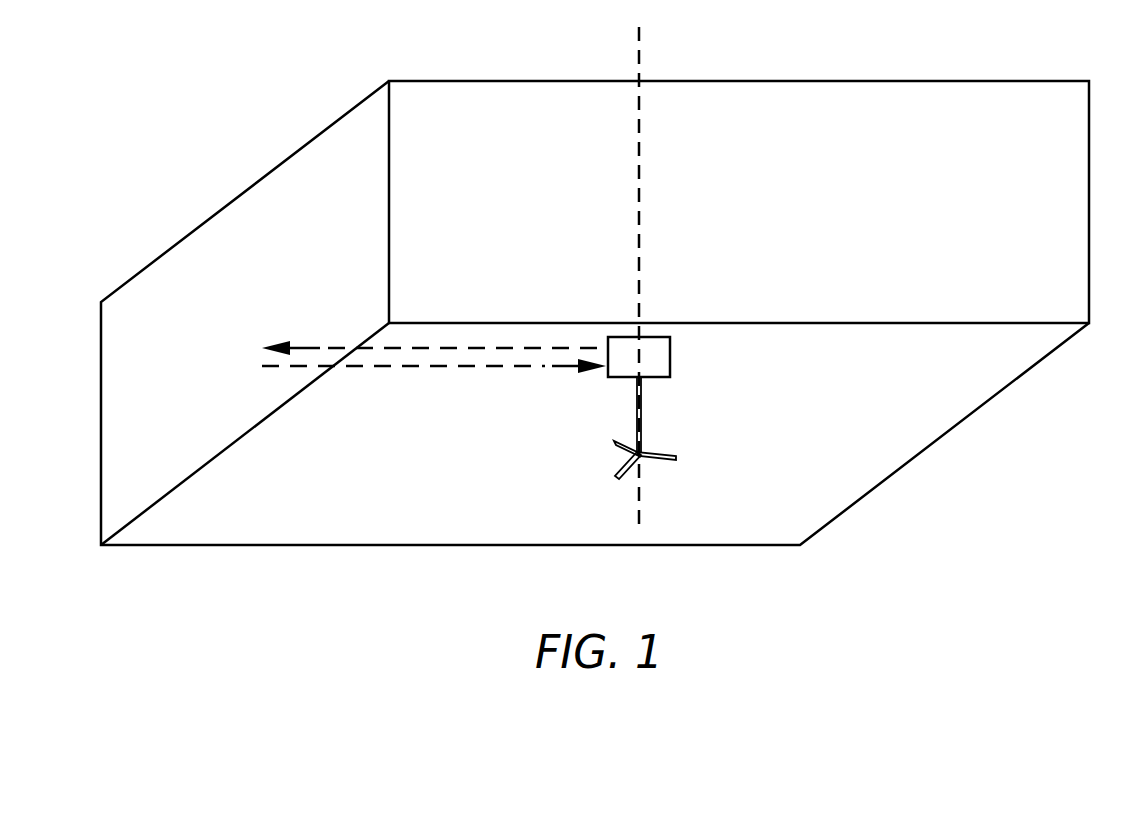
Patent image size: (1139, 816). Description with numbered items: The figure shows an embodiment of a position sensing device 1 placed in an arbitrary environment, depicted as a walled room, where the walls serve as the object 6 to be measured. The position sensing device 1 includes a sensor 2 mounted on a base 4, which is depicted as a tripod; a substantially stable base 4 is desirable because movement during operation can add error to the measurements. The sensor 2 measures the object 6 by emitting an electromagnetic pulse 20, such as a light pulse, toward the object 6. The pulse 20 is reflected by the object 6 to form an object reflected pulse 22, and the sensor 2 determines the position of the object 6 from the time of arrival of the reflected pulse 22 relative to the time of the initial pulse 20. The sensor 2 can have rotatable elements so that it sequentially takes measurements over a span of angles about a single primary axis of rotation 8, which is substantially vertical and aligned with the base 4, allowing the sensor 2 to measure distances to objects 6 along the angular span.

The position sensing device 1 is at (718, 286).
The sensor 2 is at (670, 355).
The base 4 is at (640, 421).
The object 6 is at (206, 288).
The axis of rotation 8 is at (641, 59).
The electromagnetic pulse 20 is at (488, 347).
The object reflected pulse 22 is at (433, 367).